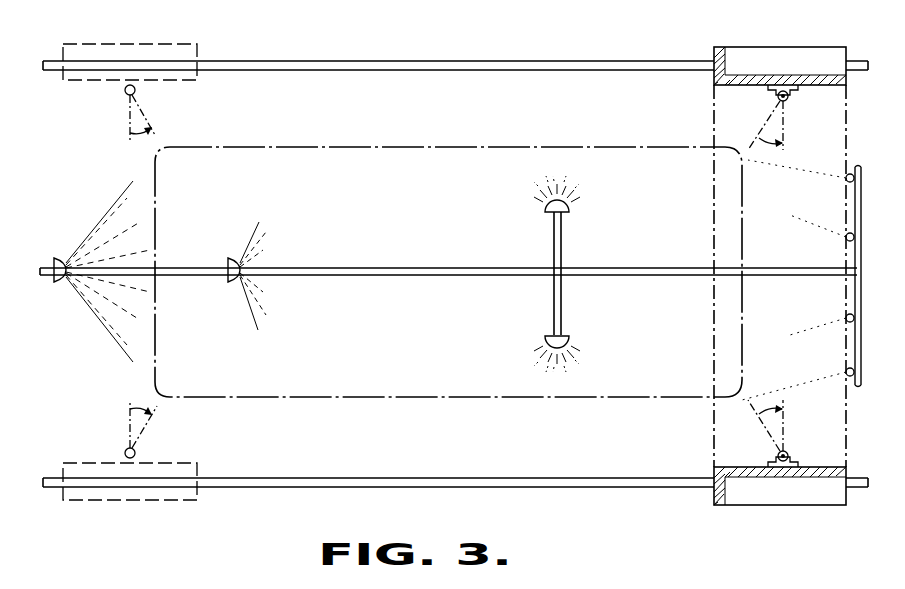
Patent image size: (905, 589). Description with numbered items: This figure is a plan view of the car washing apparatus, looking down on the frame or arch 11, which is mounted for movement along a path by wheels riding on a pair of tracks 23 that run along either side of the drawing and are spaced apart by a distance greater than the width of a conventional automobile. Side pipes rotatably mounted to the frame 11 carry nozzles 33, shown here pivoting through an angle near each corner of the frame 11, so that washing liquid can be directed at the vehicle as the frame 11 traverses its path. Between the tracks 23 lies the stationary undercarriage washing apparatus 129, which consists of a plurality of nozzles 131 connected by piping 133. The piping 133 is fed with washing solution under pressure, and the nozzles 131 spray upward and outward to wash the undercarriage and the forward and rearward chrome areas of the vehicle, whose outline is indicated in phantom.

The frame 11 is at (808, 47).
The tracks 23 is at (421, 66).
The nozzles 33 is at (136, 449).
The stationary undercarriage washing apparatus 129 is at (600, 215).
The nozzles 131 is at (66, 284).
The piping 133 is at (313, 276).